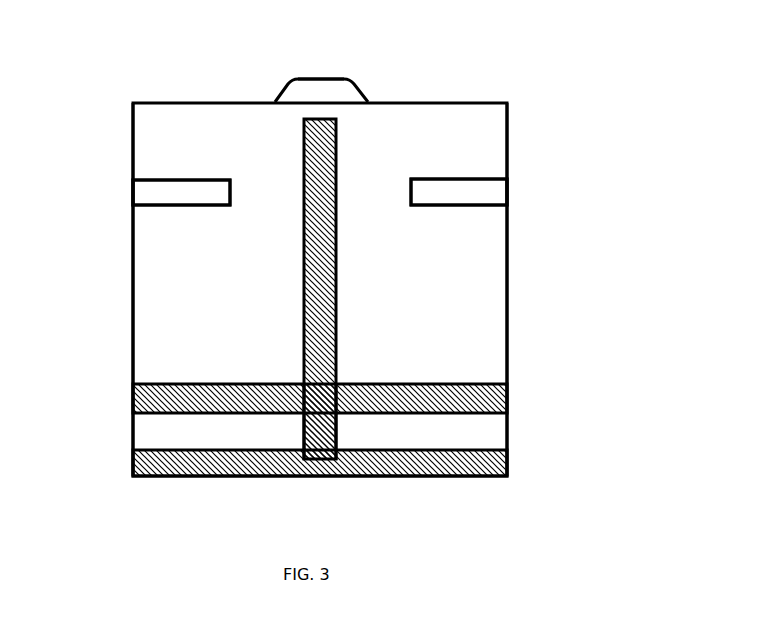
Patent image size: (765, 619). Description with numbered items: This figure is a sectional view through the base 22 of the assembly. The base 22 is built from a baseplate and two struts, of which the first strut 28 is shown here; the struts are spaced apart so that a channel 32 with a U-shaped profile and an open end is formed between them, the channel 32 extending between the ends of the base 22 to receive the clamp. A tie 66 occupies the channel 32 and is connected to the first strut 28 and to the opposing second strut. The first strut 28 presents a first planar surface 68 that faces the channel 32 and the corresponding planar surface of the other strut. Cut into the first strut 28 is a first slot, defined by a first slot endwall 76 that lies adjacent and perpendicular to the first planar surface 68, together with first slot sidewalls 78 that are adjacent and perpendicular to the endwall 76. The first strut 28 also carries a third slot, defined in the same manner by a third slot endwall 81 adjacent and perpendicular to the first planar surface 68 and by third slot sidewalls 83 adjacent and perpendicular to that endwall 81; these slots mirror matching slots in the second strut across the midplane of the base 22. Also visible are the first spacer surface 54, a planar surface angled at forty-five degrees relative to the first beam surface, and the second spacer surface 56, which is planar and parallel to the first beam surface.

The base 22 is at (543, 68).
The first strut 28 is at (145, 247).
The channel 32 is at (158, 291).
The first spacer surface 54 is at (365, 95).
The second spacer surface 56 is at (320, 79).
The tie 66 is at (336, 152).
The first planar surface 68 is at (238, 287).
The first slot endwall 76 is at (232, 182).
The first slot sidewalls 78 is at (140, 192).
The third slot endwall 81 is at (410, 184).
The third slot sidewalls 83 is at (452, 180).